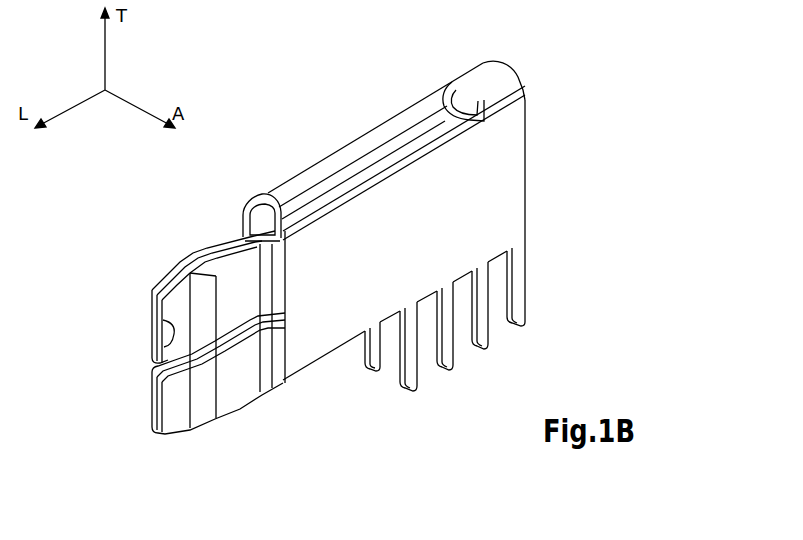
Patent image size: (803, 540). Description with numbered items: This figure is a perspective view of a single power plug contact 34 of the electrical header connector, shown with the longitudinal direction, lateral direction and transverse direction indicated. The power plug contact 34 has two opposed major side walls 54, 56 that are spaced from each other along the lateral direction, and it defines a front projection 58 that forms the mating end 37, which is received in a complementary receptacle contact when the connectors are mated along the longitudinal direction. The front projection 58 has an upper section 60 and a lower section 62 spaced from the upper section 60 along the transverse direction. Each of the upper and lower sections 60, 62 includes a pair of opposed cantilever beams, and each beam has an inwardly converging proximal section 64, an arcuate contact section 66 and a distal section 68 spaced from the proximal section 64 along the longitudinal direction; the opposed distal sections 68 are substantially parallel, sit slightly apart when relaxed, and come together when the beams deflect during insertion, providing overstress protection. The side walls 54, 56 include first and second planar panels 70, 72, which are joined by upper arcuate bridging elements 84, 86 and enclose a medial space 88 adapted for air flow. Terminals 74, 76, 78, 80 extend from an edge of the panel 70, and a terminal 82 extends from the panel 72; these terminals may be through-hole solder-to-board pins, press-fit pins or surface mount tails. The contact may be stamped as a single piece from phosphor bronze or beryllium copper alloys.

The power plug contact 34 is at (342, 120).
The mating end 37 is at (118, 298).
The major side wall 54 is at (332, 347).
The major side wall 56 is at (423, 94).
The front projection 58 is at (125, 412).
The upper section 60 is at (197, 213).
The lower section 62 is at (252, 402).
The proximal section 64 is at (238, 232).
The arcuate contact section 66 is at (168, 270).
The distal section 68 is at (148, 318).
The first planar panel 70 is at (527, 196).
The second planar panel 72 is at (335, 186).
The terminal 74 is at (408, 392).
The terminal 76 is at (448, 372).
The terminal 78 is at (481, 349).
The terminal 80 is at (530, 322).
The terminal 82 is at (363, 372).
The upper arcuate bridging element 84 is at (276, 192).
The upper arcuate bridging element 86 is at (515, 78).
The medial space 88 is at (384, 134).